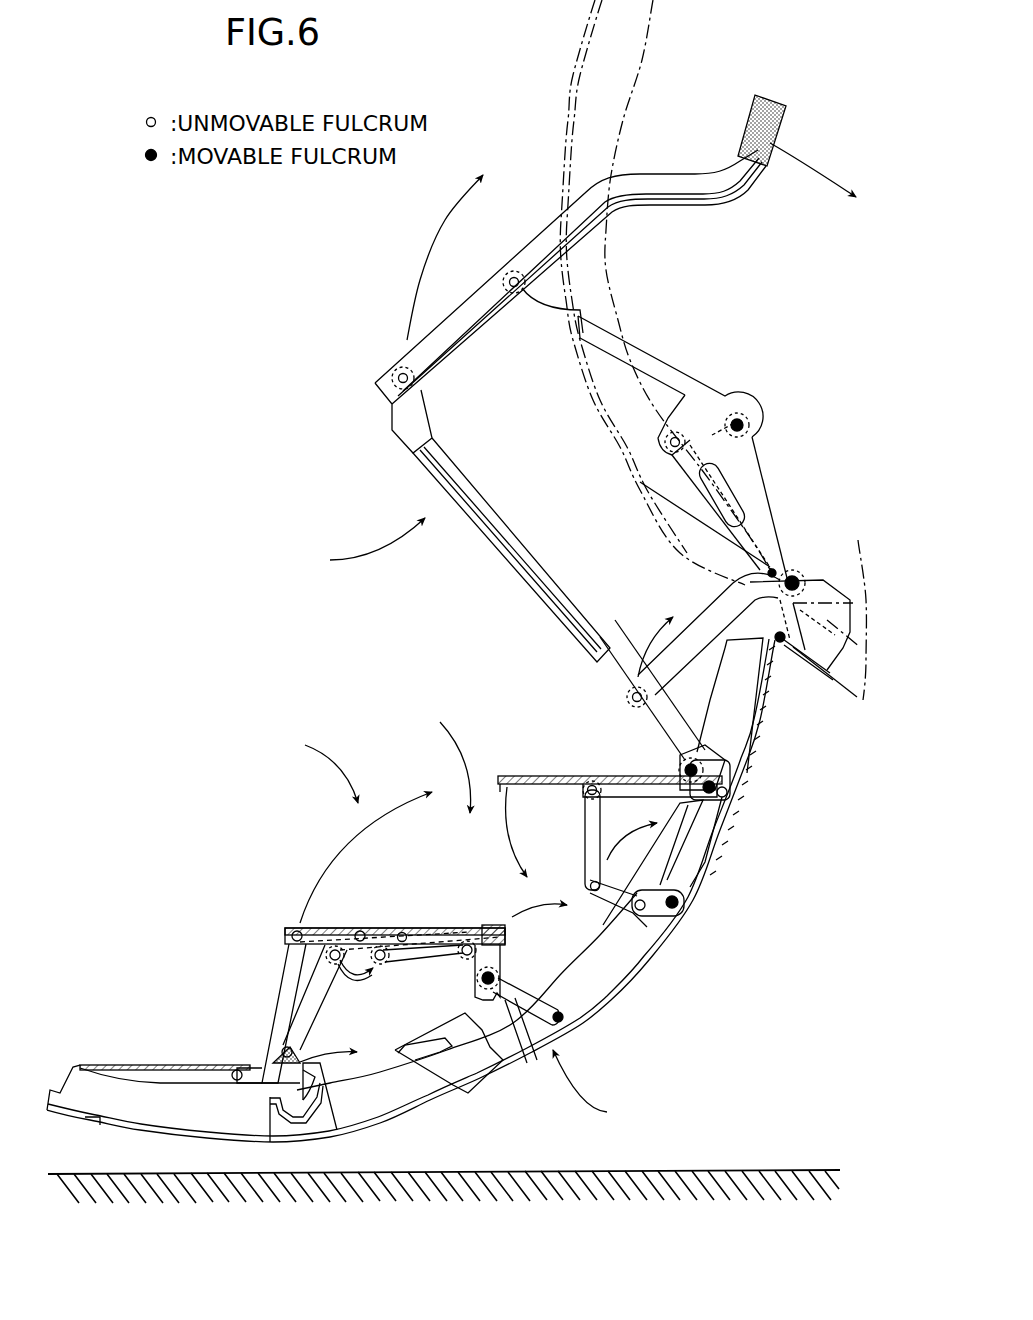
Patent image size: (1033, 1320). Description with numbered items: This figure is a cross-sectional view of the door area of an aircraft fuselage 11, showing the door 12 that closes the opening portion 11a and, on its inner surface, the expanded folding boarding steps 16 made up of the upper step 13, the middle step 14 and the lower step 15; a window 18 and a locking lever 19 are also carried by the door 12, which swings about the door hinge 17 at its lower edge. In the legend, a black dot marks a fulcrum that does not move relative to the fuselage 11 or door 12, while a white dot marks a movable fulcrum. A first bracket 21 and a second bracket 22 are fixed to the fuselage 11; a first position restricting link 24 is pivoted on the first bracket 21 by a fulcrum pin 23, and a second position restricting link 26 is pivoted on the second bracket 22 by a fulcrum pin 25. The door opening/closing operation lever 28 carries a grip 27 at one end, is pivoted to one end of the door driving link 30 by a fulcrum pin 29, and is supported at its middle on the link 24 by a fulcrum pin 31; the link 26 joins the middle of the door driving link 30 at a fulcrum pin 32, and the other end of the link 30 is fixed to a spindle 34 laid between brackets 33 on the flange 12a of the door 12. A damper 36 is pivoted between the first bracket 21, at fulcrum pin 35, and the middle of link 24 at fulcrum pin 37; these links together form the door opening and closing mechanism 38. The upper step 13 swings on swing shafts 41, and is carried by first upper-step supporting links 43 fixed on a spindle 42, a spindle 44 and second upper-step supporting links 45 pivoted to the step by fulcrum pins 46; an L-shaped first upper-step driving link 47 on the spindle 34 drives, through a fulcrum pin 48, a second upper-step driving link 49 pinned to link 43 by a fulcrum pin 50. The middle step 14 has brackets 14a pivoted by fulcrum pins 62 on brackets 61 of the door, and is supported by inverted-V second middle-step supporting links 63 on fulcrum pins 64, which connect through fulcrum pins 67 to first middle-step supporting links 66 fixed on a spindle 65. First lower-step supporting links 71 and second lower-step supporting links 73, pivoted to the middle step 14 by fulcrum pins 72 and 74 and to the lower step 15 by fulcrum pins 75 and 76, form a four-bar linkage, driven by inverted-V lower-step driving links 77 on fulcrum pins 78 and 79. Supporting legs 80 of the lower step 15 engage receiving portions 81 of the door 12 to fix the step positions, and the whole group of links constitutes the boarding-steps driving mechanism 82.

The fuselage 11 is at (568, 74).
The opening portion 11a is at (588, 403).
The door 12 is at (622, 1108).
The flange 12a is at (603, 977).
The upper step 13 is at (577, 765).
The middle step 14 is at (432, 928).
The brackets 14a is at (505, 947).
The lower step 15 is at (140, 1063).
The boarding steps 16 is at (307, 730).
The door hinge 17 is at (777, 650).
The window 18 is at (385, 1128).
The locking lever 19 is at (430, 1040).
The first bracket 21 is at (755, 505).
The second bracket 22 is at (838, 677).
The fulcrum pin 23 is at (744, 418).
The first position restricting link 24 is at (683, 365).
The fulcrum pin 25 is at (798, 578).
The second position restricting link 26 is at (703, 623).
The grip 27 is at (755, 118).
The door opening/closing operation lever 28 is at (638, 190).
The fulcrum pin 29 is at (378, 378).
The door driving link 30 is at (513, 567).
The fulcrum pin 31 is at (510, 278).
The fulcrum pin 32 is at (630, 698).
The brackets 33 is at (700, 747).
The spindle 34 is at (682, 766).
The fulcrum pin 35 is at (775, 568).
The damper 36 is at (727, 490).
The fulcrum pin 37 is at (666, 440).
The door opening and closing mechanism 38 is at (361, 541).
The swing shafts 41 is at (722, 766).
The spindle 42 is at (685, 902).
The first upper-step supporting links 43 is at (622, 890).
The spindle 44 is at (588, 888).
The second upper-step supporting links 45 is at (585, 840).
The fulcrum pins 46 is at (583, 795).
The first upper-step driving link 47 is at (730, 776).
The fulcrum pin 48 is at (728, 793).
The second upper-step driving link 49 is at (703, 853).
The fulcrum pin 50 is at (643, 912).
The brackets 61 is at (522, 1040).
The fulcrum pins 62 is at (478, 983).
The second middle-step supporting links 63 is at (442, 950).
The fulcrum pins 64 is at (402, 931).
The spindle 65 is at (565, 1028).
The first middle-step supporting links 66 is at (510, 975).
The fulcrum pins 67 is at (466, 944).
The first lower-step supporting links 71 is at (315, 1000).
The fulcrum pins 72 is at (360, 930).
The second lower-step supporting links 73 is at (278, 985).
The fulcrum pins 74 is at (297, 930).
The fulcrum pins 75 is at (280, 1045).
The fulcrum pins 76 is at (232, 1070).
The lower-step driving links 77 is at (352, 977).
The fulcrum pins 78 is at (382, 962).
The fulcrum pins 79 is at (335, 950).
The supporting legs 80 is at (315, 1077).
The receiving portions 81 is at (270, 1101).
The boarding-steps driving mechanism 82 is at (442, 712).